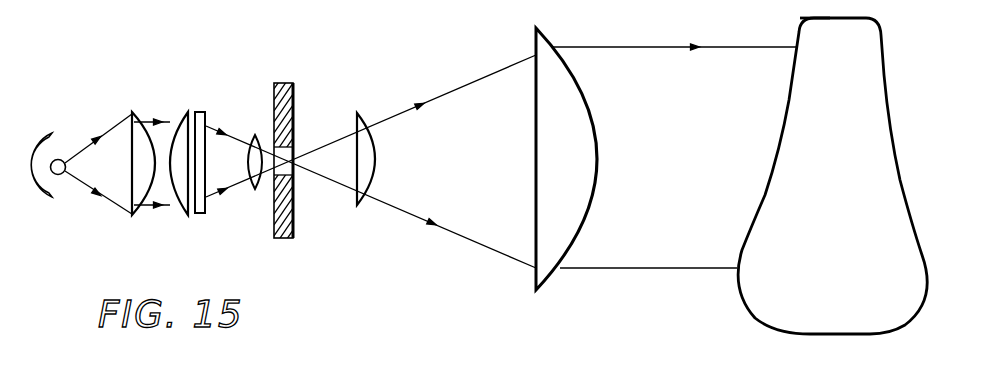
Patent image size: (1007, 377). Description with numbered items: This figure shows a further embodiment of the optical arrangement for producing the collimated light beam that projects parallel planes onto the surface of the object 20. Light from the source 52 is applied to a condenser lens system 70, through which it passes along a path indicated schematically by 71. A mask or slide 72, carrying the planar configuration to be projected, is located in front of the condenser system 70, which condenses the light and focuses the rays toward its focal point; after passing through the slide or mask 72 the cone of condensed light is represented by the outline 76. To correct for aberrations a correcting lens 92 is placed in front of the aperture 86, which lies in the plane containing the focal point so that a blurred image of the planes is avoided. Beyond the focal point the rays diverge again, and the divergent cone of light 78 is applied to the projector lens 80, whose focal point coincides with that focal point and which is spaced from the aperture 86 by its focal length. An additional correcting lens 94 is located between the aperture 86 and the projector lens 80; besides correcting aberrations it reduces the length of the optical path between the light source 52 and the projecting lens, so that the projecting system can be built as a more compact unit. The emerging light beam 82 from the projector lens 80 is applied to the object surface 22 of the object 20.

The source 52 is at (61, 159).
The condenser lens system 70 is at (158, 103).
The path 71 is at (152, 212).
The mask or slide 72 is at (192, 112).
The outline 76 is at (209, 201).
The correcting lens 92 is at (252, 139).
The aperture 86 is at (294, 85).
The additional correcting lens 94 is at (378, 161).
The divergent cone of light 78 is at (459, 238).
The projector lens 80 is at (599, 170).
The emerging light beam 82 is at (640, 44).
The object surface 22 is at (797, 39).
The object 20 is at (843, 231).